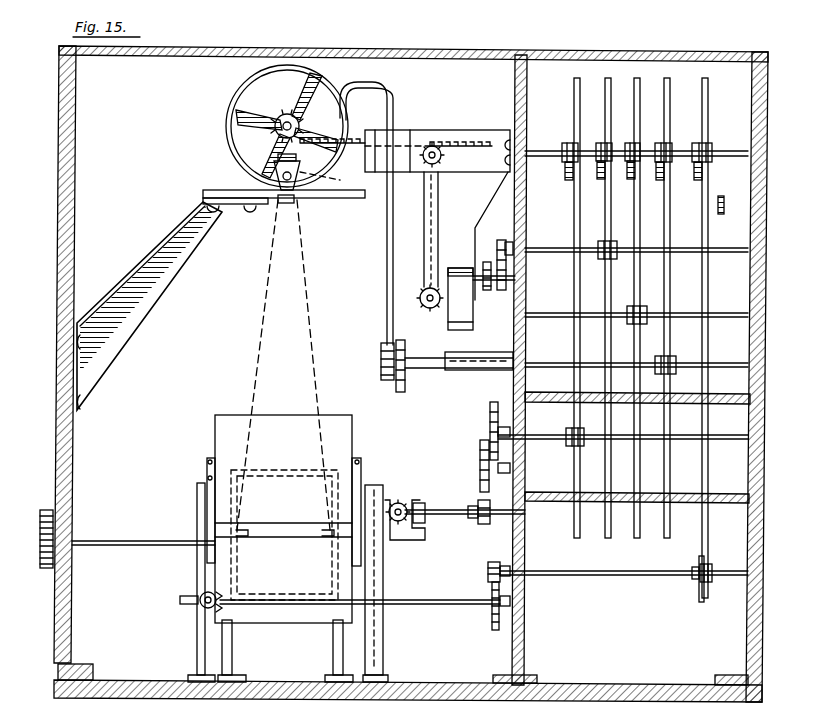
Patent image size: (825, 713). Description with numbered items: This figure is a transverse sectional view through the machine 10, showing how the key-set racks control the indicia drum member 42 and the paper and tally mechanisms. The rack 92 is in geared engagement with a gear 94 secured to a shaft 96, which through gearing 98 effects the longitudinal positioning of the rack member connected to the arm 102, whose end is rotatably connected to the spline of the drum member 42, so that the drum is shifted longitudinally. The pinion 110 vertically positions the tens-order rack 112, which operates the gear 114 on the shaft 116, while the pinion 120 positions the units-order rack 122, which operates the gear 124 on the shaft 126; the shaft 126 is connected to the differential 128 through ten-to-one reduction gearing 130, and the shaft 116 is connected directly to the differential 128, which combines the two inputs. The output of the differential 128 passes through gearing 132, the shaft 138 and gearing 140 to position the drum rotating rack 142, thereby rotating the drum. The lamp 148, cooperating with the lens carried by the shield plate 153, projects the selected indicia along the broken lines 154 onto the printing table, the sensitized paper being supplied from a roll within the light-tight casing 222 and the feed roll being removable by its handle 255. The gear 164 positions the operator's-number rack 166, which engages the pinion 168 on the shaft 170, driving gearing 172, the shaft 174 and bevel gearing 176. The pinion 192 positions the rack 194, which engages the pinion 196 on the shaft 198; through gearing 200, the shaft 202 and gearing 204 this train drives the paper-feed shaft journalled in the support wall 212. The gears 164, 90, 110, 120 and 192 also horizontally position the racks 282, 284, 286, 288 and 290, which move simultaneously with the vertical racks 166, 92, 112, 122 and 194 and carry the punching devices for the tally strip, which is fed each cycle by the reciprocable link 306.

The housing 10 is at (58, 162).
The drum member 42 is at (226, 133).
The arm 102 is at (388, 90).
The drum rotating or positioning rack 142 is at (455, 130).
The gearing 140 is at (442, 155).
The shaft 138 is at (423, 250).
The reduction gearing 130 is at (480, 262).
The gearing 132 is at (420, 300).
The differential 128 is at (455, 330).
The gearing 98 is at (395, 380).
The lamp 148 is at (348, 182).
The shield plate 153 is at (325, 199).
The broken lines 154 is at (270, 299).
The light-tight casing 222 is at (230, 442).
The support wall 212 is at (383, 655).
The bevel gearing 176 is at (200, 602).
The handle 255 is at (45, 510).
The gearing 204 is at (400, 502).
The shaft 202 is at (443, 510).
The gearing 200 is at (490, 448).
The shaft 198 is at (543, 434).
The gear or pinion 196 is at (566, 446).
The shaft 170 is at (555, 576).
The gearing 172 is at (492, 595).
The shaft 174 is at (442, 605).
The gear or pinion 168 is at (708, 565).
The rack 166 is at (700, 600).
The rack 194 is at (577, 538).
The rack 122 is at (607, 538).
The rack 112 is at (636, 538).
The rack 92 is at (667, 492).
The pinion 192 is at (566, 144).
The rack 290 is at (570, 180).
The pinion 120 is at (600, 143).
The rack 288 is at (600, 179).
The pinion 110 is at (631, 143).
The rack 286 is at (630, 180).
The gear 90 is at (666, 143).
The rack 284 is at (660, 180).
The gear 164 is at (712, 150).
The rack 282 is at (697, 180).
The link 306 is at (726, 200).
The shaft 126 is at (546, 250).
The gear or pinion 124 is at (602, 242).
The shaft 116 is at (545, 313).
The gear 114 is at (643, 306).
The shaft 96 is at (544, 363).
The gear 94 is at (670, 357).